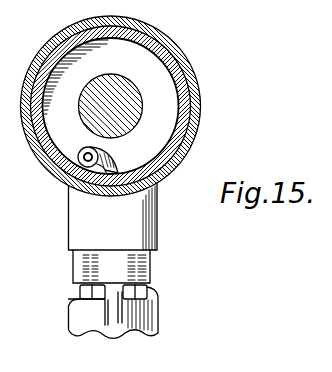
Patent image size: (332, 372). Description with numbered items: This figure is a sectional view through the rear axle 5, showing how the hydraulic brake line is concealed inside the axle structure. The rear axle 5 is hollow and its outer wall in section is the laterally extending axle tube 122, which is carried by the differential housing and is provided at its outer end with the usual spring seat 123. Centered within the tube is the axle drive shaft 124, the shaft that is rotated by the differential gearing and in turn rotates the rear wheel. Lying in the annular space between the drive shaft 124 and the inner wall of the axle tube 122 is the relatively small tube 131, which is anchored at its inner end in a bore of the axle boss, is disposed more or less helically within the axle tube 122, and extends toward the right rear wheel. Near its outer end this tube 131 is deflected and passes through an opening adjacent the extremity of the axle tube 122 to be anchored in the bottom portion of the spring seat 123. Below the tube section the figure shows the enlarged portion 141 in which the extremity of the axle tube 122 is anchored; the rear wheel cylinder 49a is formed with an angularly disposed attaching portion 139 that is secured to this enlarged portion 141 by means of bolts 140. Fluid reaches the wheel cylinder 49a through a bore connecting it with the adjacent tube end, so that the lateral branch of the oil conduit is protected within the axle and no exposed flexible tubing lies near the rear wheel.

The rear axle 5 is at (192, 43).
The axle tube 122 is at (183, 75).
The spring seat 123 is at (197, 92).
The axle drive shaft 124 is at (135, 110).
The tube 131 is at (102, 162).
The enlarged portion 141 is at (142, 217).
The attaching portion 139 is at (150, 272).
The bolt 140 is at (140, 292).
The wheel cylinder 49a is at (148, 317).